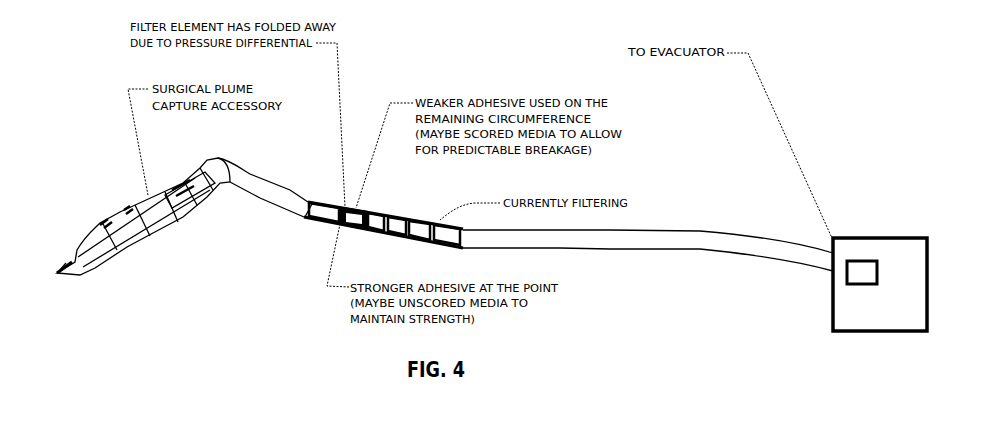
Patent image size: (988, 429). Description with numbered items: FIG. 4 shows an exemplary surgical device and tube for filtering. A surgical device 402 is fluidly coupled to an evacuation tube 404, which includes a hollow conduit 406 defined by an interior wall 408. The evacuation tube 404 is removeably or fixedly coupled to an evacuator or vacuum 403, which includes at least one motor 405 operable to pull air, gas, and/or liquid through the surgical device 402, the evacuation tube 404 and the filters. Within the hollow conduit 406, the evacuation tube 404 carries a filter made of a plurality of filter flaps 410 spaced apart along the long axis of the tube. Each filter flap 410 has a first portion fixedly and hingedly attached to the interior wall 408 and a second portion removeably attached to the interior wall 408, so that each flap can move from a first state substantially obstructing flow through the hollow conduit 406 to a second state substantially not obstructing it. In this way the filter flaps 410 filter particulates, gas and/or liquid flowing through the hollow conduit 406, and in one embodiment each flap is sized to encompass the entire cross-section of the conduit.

The surgical device 402 is at (83, 220).
The evacuator or vacuum 403 is at (831, 334).
The evacuation tube 404 is at (625, 251).
The motor 405 is at (855, 259).
The hollow conduit 406 is at (258, 191).
The interior wall 408 is at (584, 251).
The filter flaps 410 is at (425, 249).